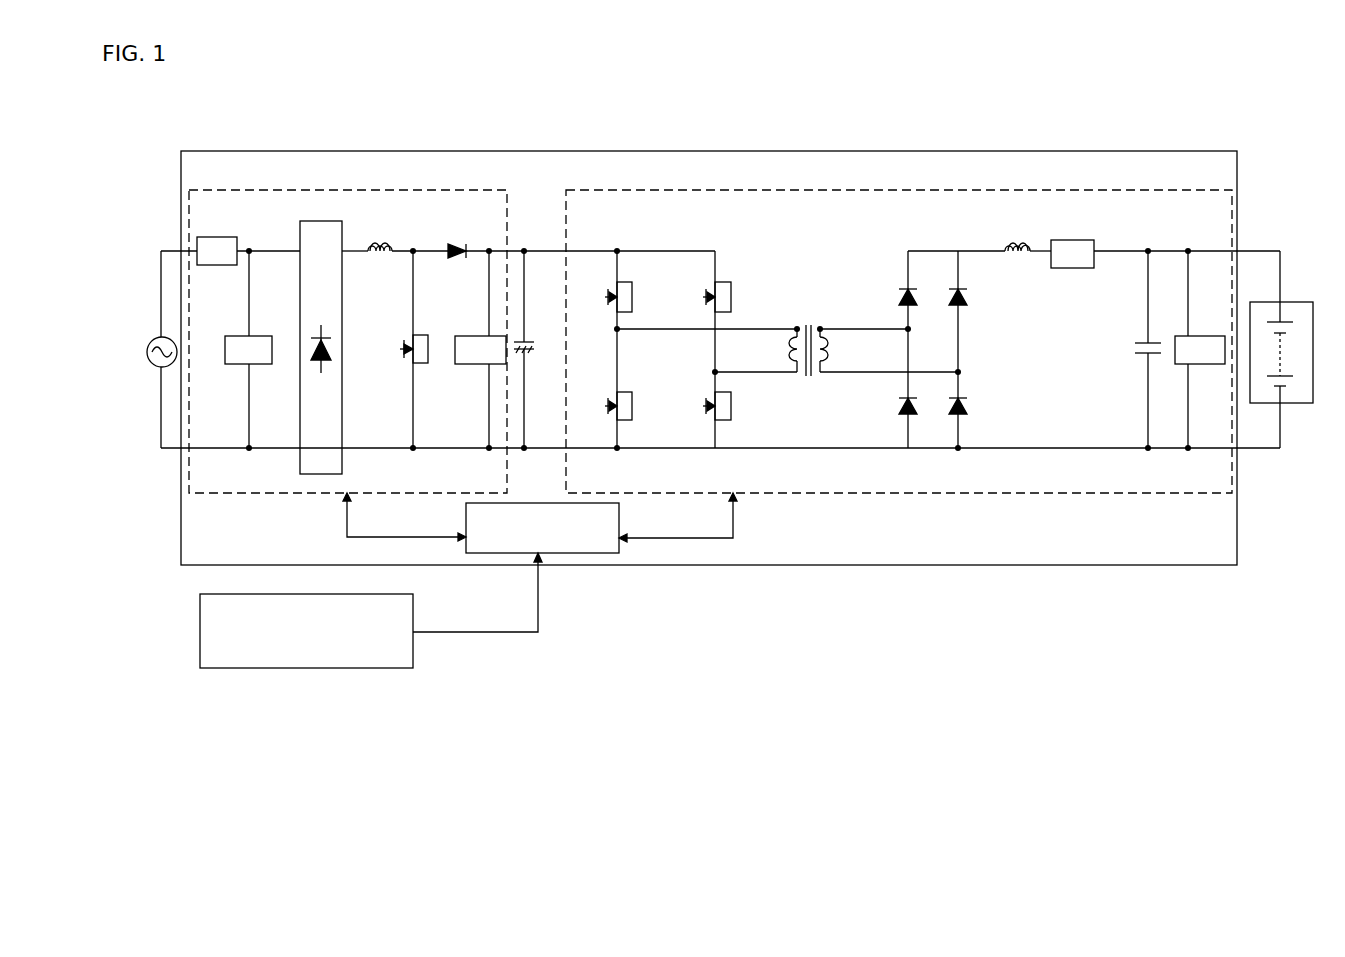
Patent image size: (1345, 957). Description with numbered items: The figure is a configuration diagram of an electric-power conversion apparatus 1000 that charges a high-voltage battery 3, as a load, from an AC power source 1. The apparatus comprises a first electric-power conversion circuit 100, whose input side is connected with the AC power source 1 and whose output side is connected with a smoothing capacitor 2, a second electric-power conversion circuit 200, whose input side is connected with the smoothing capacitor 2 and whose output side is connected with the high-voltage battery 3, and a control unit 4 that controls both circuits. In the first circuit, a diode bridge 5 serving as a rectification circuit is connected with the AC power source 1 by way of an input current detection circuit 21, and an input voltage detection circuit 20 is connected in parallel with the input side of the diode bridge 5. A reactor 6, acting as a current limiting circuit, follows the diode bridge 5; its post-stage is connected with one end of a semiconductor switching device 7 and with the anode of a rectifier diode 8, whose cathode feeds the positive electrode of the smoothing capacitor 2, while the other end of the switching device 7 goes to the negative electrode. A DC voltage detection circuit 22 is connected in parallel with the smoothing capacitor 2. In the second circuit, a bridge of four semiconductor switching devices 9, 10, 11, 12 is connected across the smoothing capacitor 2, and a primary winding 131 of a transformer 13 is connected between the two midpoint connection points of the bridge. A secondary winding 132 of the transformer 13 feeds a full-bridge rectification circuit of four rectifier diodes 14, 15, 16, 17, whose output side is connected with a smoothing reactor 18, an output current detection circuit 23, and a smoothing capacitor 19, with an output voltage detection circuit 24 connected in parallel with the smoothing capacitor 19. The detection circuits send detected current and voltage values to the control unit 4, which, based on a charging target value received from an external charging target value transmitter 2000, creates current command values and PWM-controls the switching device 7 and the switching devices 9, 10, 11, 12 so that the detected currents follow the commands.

The electric-power conversion apparatus 1000 is at (214, 151).
The first electric-power conversion circuit 100 is at (438, 190).
The second electric-power conversion circuit 200 is at (602, 190).
The AC power source 1 is at (148, 340).
The smoothing capacitor 2 is at (530, 340).
The high-voltage battery 3 is at (1313, 303).
The control unit 4 is at (619, 513).
The diode bridge 5 is at (320, 222).
The reactor 6 is at (382, 240).
The semiconductor switching device 7 is at (402, 344).
The rectifier diode 8 is at (450, 245).
The semiconductor switching device 9 is at (604, 292).
The semiconductor switching device 10 is at (604, 402).
The semiconductor switching device 11 is at (702, 292).
The semiconductor switching device 12 is at (702, 402).
The transformer 13 is at (817, 358).
The primary winding 131 is at (796, 366).
The secondary winding 132 is at (822, 366).
The rectifier diode 14 is at (903, 291).
The rectifier diode 15 is at (902, 404).
The rectifier diode 16 is at (953, 291).
The rectifier diode 17 is at (952, 404).
The smoothing reactor 18 is at (1030, 262).
The smoothing capacitor 19 is at (1132, 347).
The input voltage detection circuit 20 is at (256, 336).
The input current detection circuit 21 is at (222, 236).
The DC voltage detection circuit 22 is at (468, 336).
The output current detection circuit 23 is at (1076, 240).
The output voltage detection circuit 24 is at (1172, 336).
The charging target value transmitter 2000 is at (413, 651).